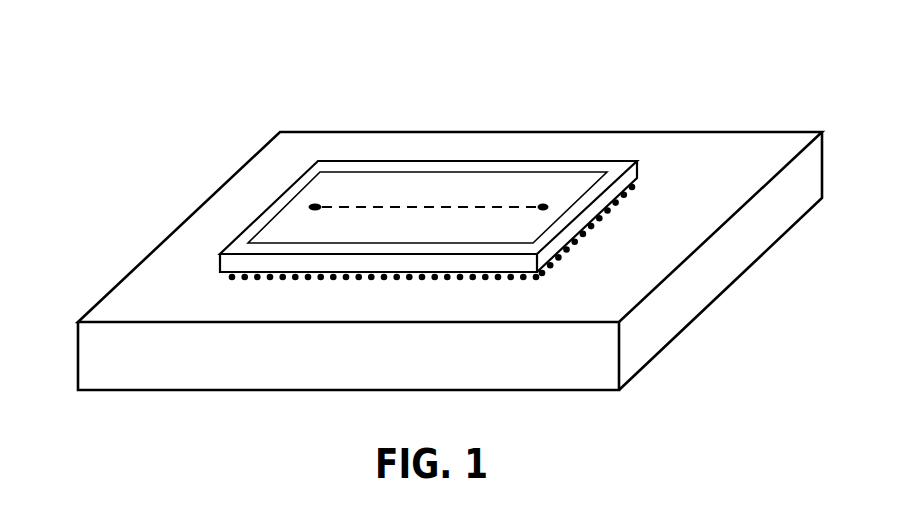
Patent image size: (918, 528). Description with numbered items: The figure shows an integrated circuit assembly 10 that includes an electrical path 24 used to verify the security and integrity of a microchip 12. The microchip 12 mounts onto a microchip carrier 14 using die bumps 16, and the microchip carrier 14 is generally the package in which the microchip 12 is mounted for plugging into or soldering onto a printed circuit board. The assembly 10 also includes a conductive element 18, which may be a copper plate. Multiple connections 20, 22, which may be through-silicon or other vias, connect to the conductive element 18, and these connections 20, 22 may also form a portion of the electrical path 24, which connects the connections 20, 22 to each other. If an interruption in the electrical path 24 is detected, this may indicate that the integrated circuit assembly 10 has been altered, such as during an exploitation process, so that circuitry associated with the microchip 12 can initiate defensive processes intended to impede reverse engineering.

The integrated circuit assembly 10 is at (422, 66).
The microchip 12 is at (240, 262).
The microchip carrier 14 is at (85, 358).
The die bumps 16 is at (345, 279).
The conductive element 18 is at (326, 188).
The connection 20 is at (315, 212).
The connection 22 is at (539, 211).
The electrical path 24 is at (442, 205).